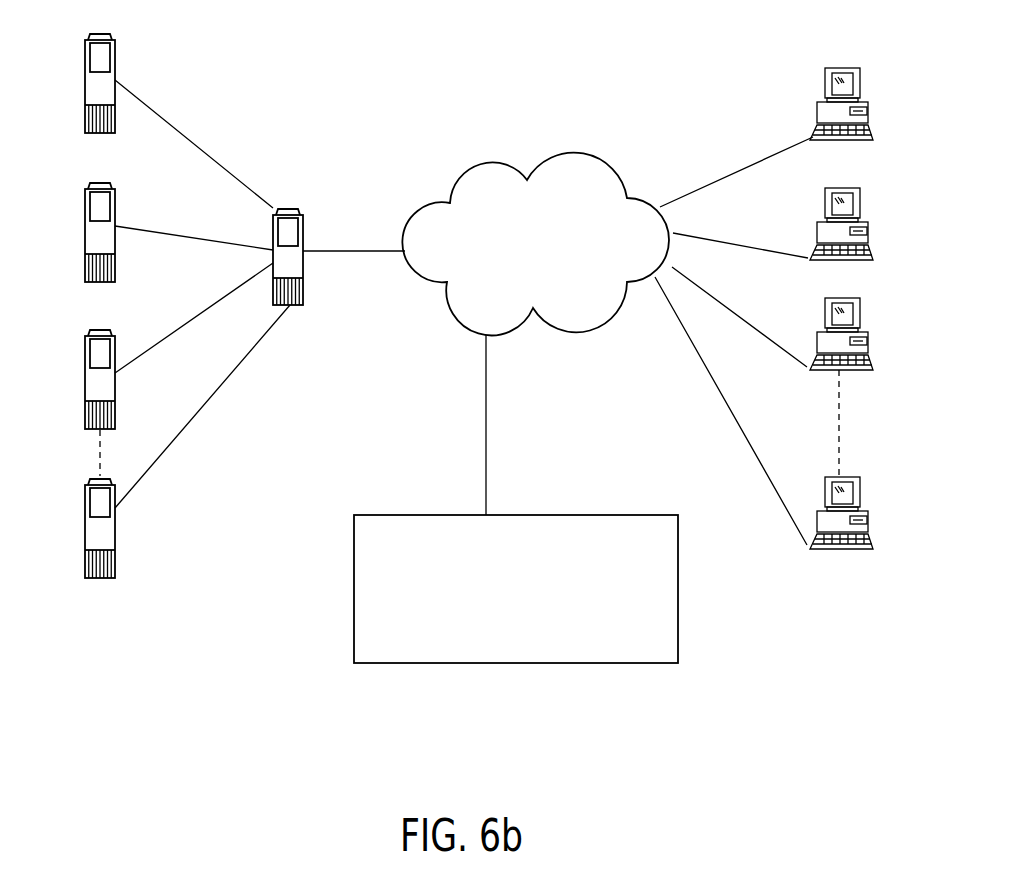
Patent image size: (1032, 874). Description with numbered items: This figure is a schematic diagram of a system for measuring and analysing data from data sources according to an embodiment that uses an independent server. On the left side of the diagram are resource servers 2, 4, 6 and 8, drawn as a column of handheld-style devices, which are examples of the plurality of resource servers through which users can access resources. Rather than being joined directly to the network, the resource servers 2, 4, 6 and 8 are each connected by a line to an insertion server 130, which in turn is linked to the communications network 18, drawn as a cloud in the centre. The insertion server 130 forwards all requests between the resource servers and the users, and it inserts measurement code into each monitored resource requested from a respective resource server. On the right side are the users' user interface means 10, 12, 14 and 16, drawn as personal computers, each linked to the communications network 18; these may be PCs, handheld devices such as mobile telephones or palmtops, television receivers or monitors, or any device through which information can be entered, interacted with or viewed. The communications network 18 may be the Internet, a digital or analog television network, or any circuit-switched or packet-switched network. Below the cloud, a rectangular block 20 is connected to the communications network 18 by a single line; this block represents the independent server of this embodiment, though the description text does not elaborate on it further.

The resource server 2 is at (85, 65).
The resource server 4 is at (77, 232).
The resource server 6 is at (77, 378).
The resource server 8 is at (77, 526).
The insertion server 130 is at (295, 227).
The communications network 18 is at (547, 256).
The server 20 is at (354, 588).
The user interface means 10 is at (860, 85).
The user interface means 12 is at (861, 219).
The user interface means 14 is at (861, 330).
The user interface means 16 is at (861, 509).